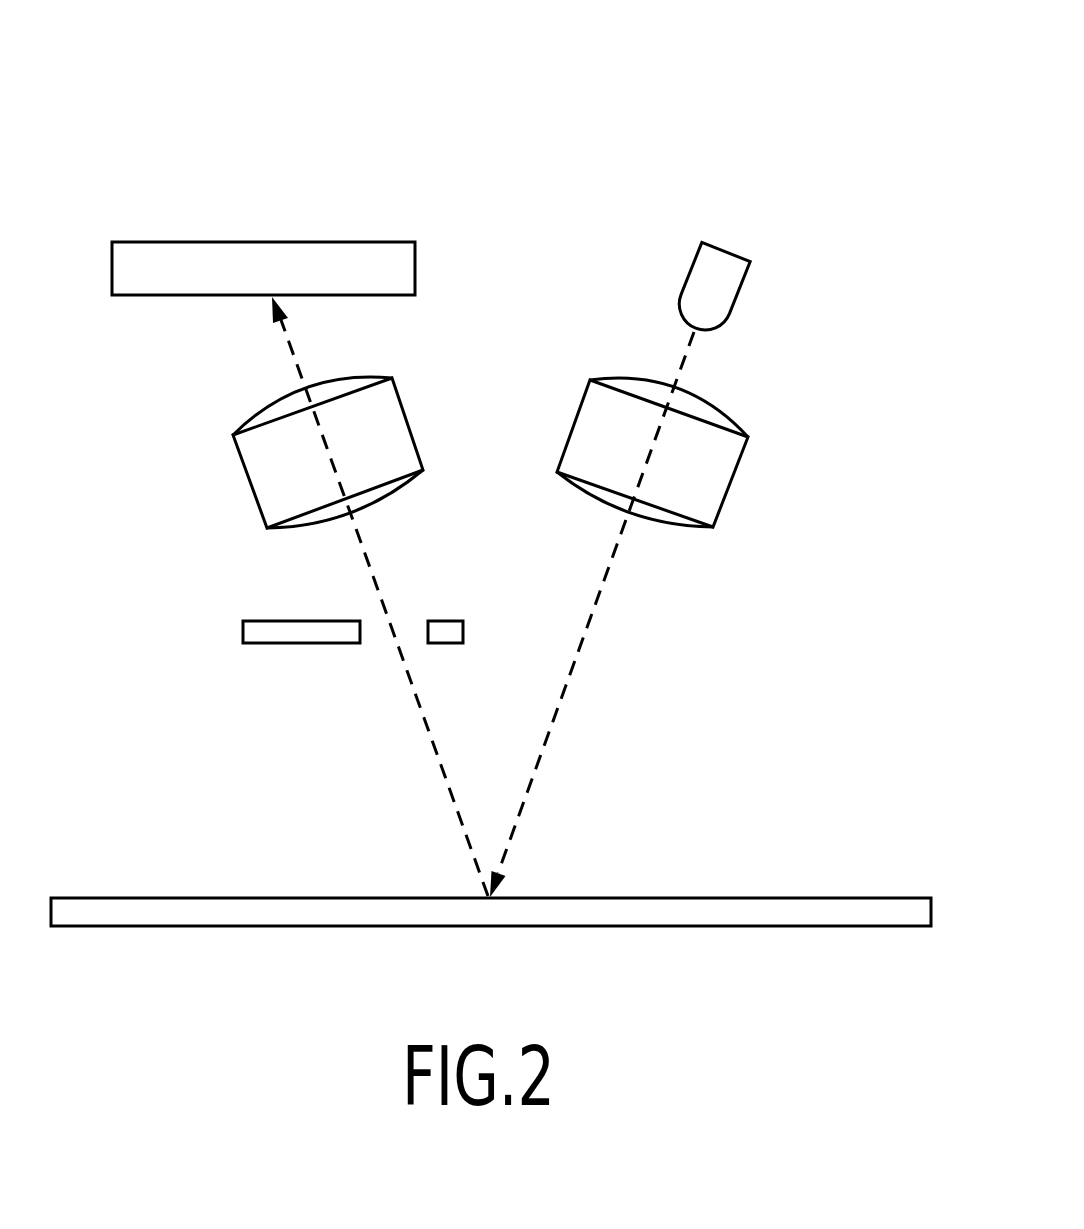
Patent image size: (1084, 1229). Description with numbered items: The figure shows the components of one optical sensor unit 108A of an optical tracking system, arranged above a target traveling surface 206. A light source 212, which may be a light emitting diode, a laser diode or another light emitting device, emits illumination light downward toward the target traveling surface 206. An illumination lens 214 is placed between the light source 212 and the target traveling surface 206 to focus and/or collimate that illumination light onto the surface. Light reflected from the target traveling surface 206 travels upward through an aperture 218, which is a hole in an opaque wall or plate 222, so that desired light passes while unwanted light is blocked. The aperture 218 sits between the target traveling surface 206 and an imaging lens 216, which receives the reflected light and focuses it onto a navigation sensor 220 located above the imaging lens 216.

The optical sensor unit 108A is at (796, 52).
The target traveling surface 206 is at (818, 898).
The light source 212 is at (728, 247).
The illumination lens 214 is at (573, 413).
The imaging lens 216 is at (407, 410).
The aperture 218 is at (378, 638).
The navigation sensor 220 is at (303, 242).
The opaque wall or plate 222 is at (243, 632).